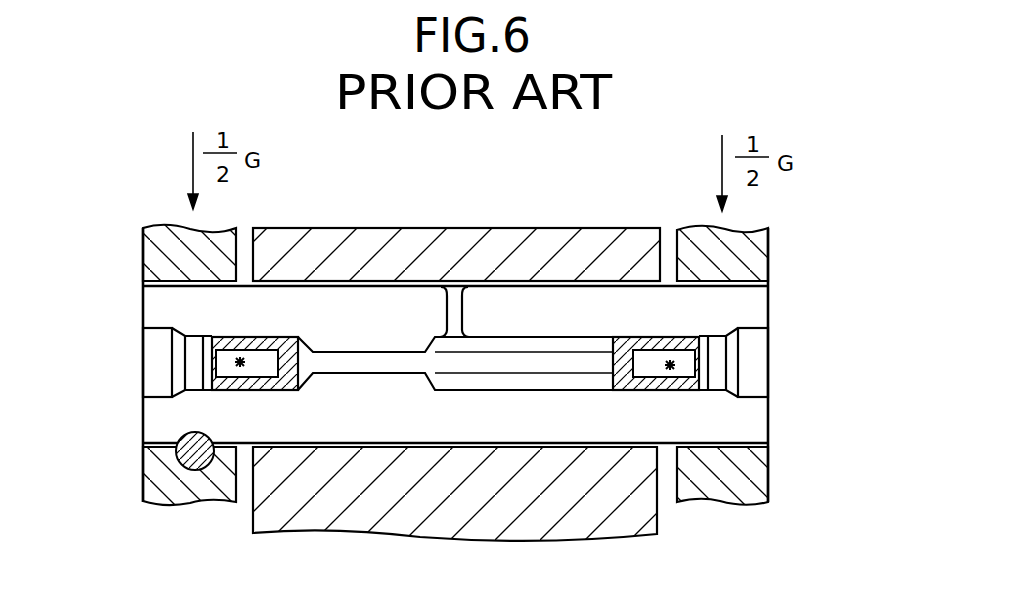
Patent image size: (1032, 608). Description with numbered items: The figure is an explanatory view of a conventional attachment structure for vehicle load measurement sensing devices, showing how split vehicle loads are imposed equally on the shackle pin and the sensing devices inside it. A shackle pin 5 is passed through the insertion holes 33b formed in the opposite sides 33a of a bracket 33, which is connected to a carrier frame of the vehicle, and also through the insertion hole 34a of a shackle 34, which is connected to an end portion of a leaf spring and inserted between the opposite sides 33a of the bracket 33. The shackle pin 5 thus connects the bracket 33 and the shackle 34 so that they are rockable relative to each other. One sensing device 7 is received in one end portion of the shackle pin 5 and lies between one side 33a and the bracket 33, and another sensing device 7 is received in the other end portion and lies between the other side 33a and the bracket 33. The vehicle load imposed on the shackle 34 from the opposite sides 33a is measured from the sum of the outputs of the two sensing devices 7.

The shackle pin 5 is at (795, 327).
The sensing device 7 is at (270, 356).
The bracket 33 is at (795, 474).
The opposite side of the bracket 33a is at (150, 468).
The insertion hole 33b is at (175, 286).
The shackle 34 is at (592, 532).
The insertion hole of the shackle 34a is at (360, 286).